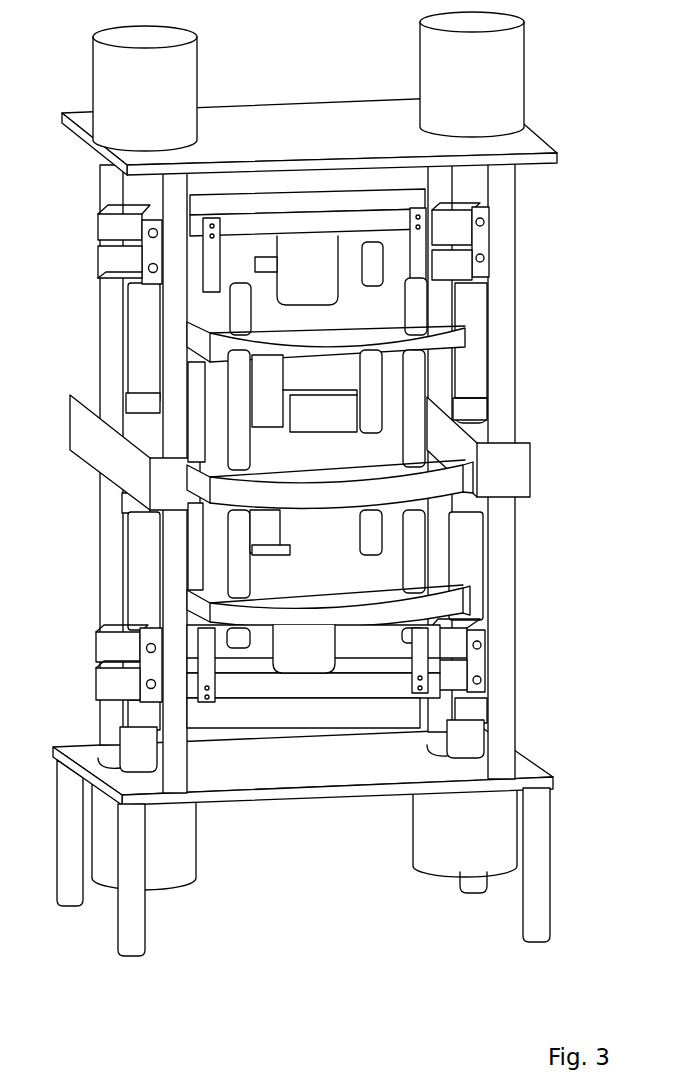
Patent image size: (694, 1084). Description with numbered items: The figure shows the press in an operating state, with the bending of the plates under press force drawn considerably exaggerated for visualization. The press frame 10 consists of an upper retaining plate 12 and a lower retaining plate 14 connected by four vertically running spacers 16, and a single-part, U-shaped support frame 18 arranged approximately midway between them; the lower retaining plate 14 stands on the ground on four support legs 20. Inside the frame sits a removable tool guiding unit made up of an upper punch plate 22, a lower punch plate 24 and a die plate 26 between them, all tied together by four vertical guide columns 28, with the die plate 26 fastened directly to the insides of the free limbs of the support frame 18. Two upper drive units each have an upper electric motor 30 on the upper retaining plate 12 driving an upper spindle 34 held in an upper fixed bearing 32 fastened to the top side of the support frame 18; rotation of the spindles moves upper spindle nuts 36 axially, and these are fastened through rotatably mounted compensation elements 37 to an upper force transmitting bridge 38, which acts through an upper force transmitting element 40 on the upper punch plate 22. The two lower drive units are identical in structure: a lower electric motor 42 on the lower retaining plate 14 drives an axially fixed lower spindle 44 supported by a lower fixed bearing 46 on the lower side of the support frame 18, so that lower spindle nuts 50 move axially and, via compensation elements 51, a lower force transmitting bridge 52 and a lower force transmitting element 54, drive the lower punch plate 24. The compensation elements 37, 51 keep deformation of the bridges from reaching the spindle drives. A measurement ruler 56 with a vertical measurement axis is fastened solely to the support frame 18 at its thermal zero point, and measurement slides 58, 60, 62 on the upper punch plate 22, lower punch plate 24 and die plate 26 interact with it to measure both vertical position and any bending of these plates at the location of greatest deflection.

The press frame 10 is at (586, 456).
The upper retaining plate 12 is at (330, 117).
The lower retaining plate 14 is at (320, 786).
The spacers 16 is at (505, 296).
The support frame 18 is at (88, 442).
The support legs 20 is at (537, 873).
The upper punch plate 22 is at (470, 338).
The lower punch plate 24 is at (453, 604).
The die plate 26 is at (452, 483).
The guide columns 28 is at (453, 393).
The upper electric motor 30 is at (103, 63).
The upper fixed bearing 32 is at (118, 397).
The upper spindles 34 is at (140, 350).
The upper spindle nuts 36 is at (118, 264).
The compensation elements 37 is at (132, 236).
The upper force transmitting bridge 38 is at (262, 215).
The upper force transmitting element 40 is at (320, 257).
The lower electric motor 42 is at (168, 870).
The lower spindles 44 is at (138, 580).
The lower fixed bearing 46 is at (122, 497).
The lower spindle nuts 50 is at (115, 650).
The compensation elements 51 is at (137, 682).
The lower force transmitting bridge 52 is at (242, 692).
The lower force transmitting element 54 is at (298, 660).
The measurement ruler 56 is at (267, 380).
The measurement slide 58 is at (288, 548).
The measurement slide 60 is at (290, 417).
The measurement slide 62 is at (257, 274).